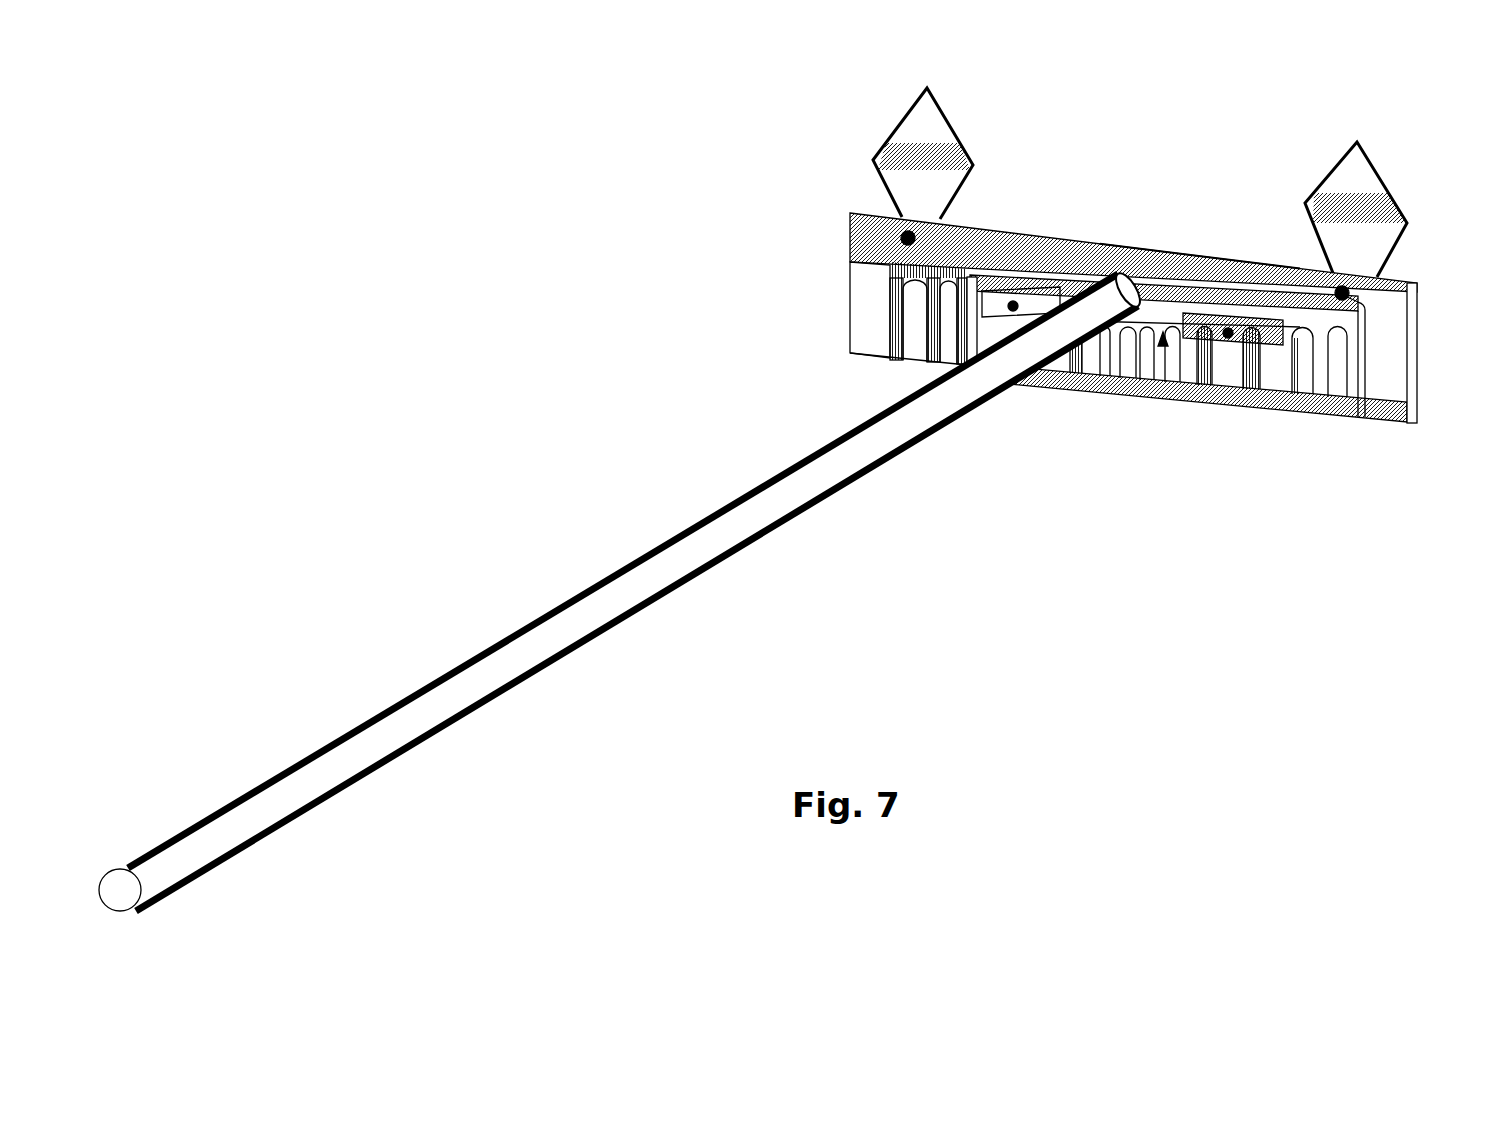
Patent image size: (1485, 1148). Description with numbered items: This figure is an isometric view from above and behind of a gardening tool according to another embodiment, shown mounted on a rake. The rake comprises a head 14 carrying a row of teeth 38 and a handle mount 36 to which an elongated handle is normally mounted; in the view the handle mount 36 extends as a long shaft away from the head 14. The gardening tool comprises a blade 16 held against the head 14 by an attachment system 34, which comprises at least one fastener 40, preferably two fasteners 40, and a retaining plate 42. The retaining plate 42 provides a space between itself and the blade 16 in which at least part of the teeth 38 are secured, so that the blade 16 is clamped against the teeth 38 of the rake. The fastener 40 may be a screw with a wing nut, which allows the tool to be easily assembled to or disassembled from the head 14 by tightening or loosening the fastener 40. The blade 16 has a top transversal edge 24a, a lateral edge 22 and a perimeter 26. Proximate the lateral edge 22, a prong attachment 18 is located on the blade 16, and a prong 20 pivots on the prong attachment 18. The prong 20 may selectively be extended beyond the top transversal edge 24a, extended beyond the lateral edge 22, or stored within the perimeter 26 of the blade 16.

The head 14 is at (1032, 228).
The blade 16 is at (1377, 420).
The prong attachment 18 is at (1357, 297).
The prong 20 is at (1358, 190).
The lateral edge 22 is at (1415, 373).
The top transversal edge 24a is at (1196, 253).
The perimeter 26 is at (850, 285).
The attachment system 34 is at (1163, 350).
The handle mount 36 is at (390, 735).
The teeth 38 is at (1312, 410).
The fastener 40 is at (1017, 303).
The retaining plate 42 is at (1120, 385).